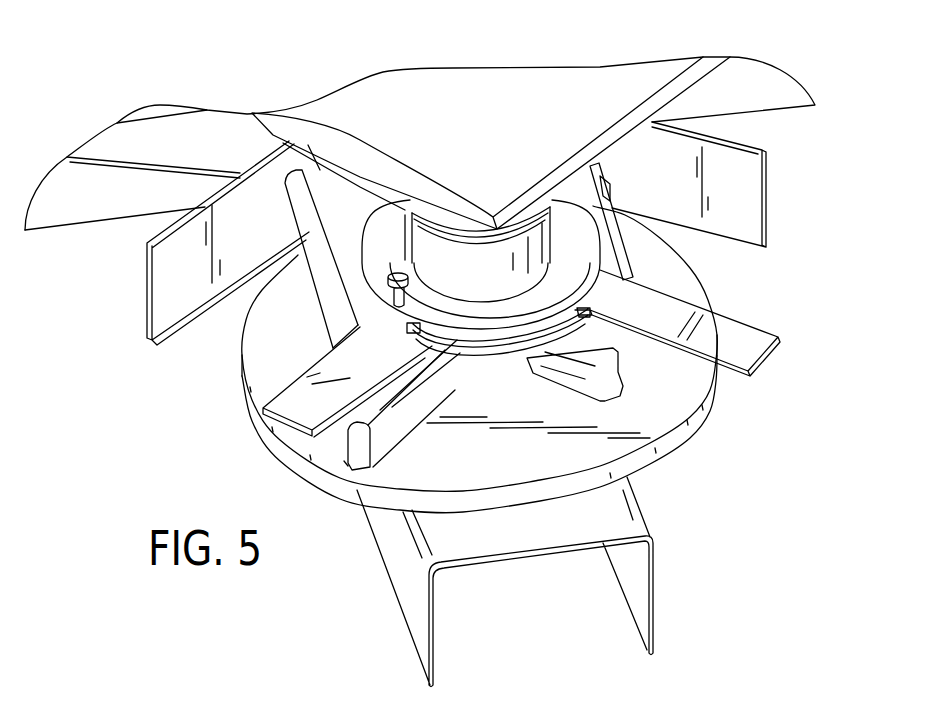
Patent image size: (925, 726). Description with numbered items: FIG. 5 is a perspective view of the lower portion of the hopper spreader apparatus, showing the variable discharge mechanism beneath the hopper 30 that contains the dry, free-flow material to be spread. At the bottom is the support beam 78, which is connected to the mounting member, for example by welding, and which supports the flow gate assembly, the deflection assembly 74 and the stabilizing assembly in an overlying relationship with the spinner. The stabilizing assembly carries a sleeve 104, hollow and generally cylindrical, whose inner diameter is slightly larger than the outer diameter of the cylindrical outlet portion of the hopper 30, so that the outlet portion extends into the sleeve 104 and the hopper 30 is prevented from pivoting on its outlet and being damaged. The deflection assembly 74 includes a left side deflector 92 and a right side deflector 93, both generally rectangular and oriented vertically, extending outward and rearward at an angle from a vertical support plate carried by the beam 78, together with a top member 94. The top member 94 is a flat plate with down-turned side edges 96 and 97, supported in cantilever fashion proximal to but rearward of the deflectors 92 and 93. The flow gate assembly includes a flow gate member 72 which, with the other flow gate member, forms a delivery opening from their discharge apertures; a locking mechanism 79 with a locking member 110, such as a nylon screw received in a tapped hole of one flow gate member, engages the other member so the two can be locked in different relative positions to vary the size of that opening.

The hopper 30 is at (660, 62).
The deflection assembly 74 is at (790, 140).
The sleeve 104 is at (447, 233).
The down-turned side edge 97 is at (610, 183).
The down-turned side edge 96 is at (292, 197).
The top member 94 is at (338, 235).
The left side deflector 92 is at (160, 288).
The right side deflector 93 is at (757, 198).
The flow gate member 72 is at (668, 305).
The locking mechanism 79 is at (383, 313).
The locking member 110 is at (400, 283).
The support beam 78 is at (392, 565).